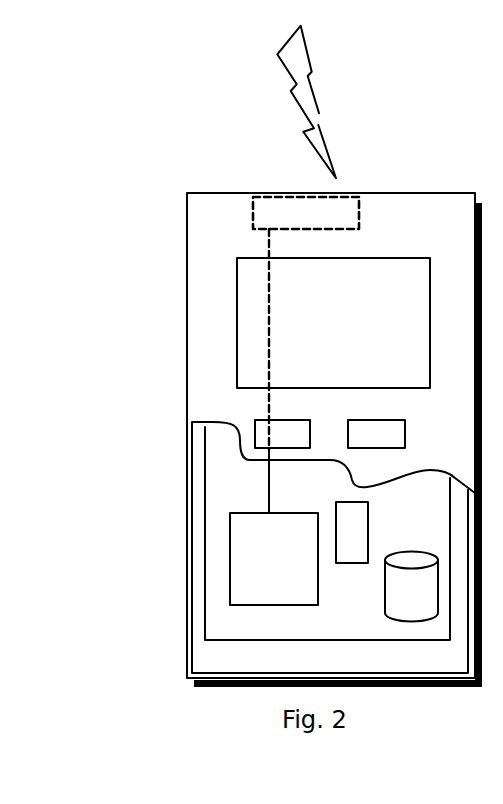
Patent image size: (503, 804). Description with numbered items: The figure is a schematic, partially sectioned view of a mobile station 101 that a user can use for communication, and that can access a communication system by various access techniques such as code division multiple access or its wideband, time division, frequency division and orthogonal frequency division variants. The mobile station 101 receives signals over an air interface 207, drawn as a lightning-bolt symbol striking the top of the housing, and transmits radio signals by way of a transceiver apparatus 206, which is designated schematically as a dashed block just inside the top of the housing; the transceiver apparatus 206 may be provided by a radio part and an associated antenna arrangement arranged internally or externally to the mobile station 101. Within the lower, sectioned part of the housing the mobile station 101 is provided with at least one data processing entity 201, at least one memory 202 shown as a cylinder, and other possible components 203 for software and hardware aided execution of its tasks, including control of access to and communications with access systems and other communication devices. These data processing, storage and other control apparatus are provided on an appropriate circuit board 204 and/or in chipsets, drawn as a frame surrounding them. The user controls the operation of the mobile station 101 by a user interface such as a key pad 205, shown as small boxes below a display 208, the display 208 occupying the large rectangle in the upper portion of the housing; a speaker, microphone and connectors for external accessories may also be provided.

The mobile device 101 is at (187, 233).
The data processing entity 201 is at (238, 543).
The memory 202 is at (405, 598).
The other possible components 203 is at (352, 518).
The circuit board 204 is at (230, 625).
The key pad 205 is at (258, 436).
The transceiver apparatus 206 is at (350, 207).
The air interface 207 is at (340, 124).
The display 208 is at (252, 310).